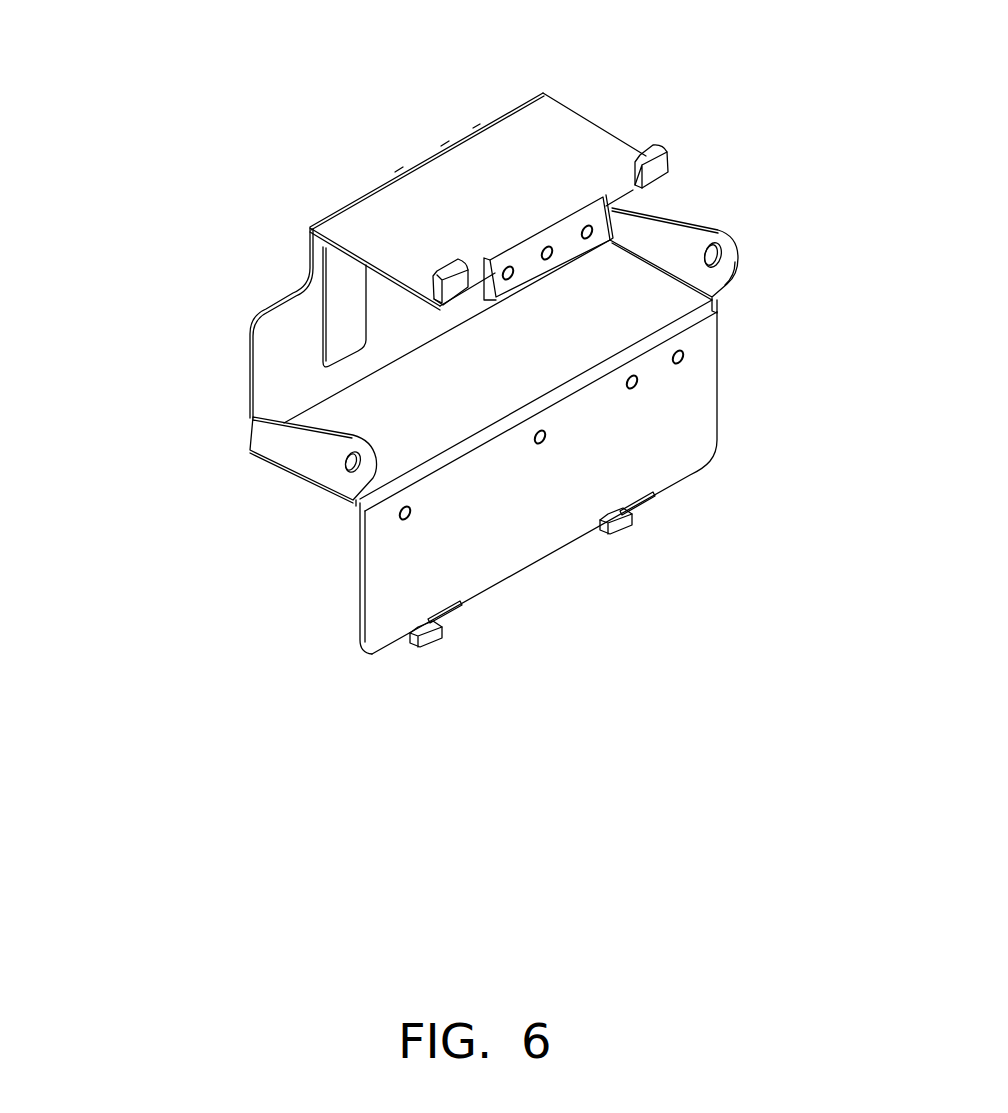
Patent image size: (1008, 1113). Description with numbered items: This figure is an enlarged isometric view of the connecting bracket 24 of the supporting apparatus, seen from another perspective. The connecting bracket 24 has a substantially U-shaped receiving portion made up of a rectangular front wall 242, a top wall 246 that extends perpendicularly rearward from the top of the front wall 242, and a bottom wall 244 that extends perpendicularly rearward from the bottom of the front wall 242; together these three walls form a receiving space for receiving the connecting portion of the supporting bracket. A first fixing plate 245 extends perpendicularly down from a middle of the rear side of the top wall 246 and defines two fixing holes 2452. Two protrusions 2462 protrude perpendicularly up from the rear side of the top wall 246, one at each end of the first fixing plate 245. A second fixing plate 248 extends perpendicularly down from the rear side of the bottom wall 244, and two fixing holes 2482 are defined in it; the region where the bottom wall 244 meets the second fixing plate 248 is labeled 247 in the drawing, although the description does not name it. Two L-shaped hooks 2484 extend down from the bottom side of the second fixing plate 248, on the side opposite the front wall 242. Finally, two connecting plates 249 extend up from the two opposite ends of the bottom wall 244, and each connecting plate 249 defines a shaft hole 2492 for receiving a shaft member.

The connecting bracket 24 is at (403, 54).
The front wall 242 is at (276, 298).
The bottom wall 244 is at (565, 363).
The first fixing plate 245 is at (565, 248).
The top wall 246 is at (553, 128).
The bending portion 247 is at (450, 458).
The second fixing plate 248 is at (686, 466).
The connecting plate 249 is at (287, 450).
The fixing hole 2452 is at (590, 233).
The protrusion 2462 is at (660, 161).
The fixing hole 2482 is at (401, 519).
The L-shaped hook 2484 is at (620, 528).
The shaft hole 2492 is at (348, 456).